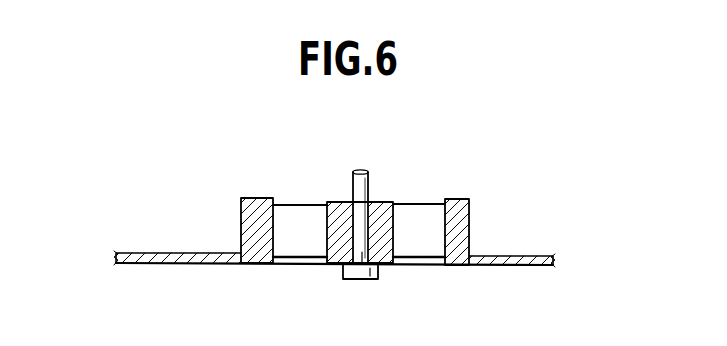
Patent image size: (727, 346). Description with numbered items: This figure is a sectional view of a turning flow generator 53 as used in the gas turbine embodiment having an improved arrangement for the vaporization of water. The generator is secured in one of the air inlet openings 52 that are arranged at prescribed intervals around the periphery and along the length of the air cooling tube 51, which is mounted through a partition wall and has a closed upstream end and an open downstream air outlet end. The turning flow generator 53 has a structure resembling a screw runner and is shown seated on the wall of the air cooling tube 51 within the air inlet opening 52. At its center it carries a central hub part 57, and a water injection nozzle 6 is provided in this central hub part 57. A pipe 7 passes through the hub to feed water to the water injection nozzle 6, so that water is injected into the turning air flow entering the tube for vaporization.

The air cooling tube 51 is at (188, 255).
The air inlet opening 52 is at (277, 186).
The turning flow generator 53 is at (307, 211).
The central hub part 57 is at (329, 240).
The pipe 7 is at (368, 187).
The water injection nozzle 6 is at (358, 279).